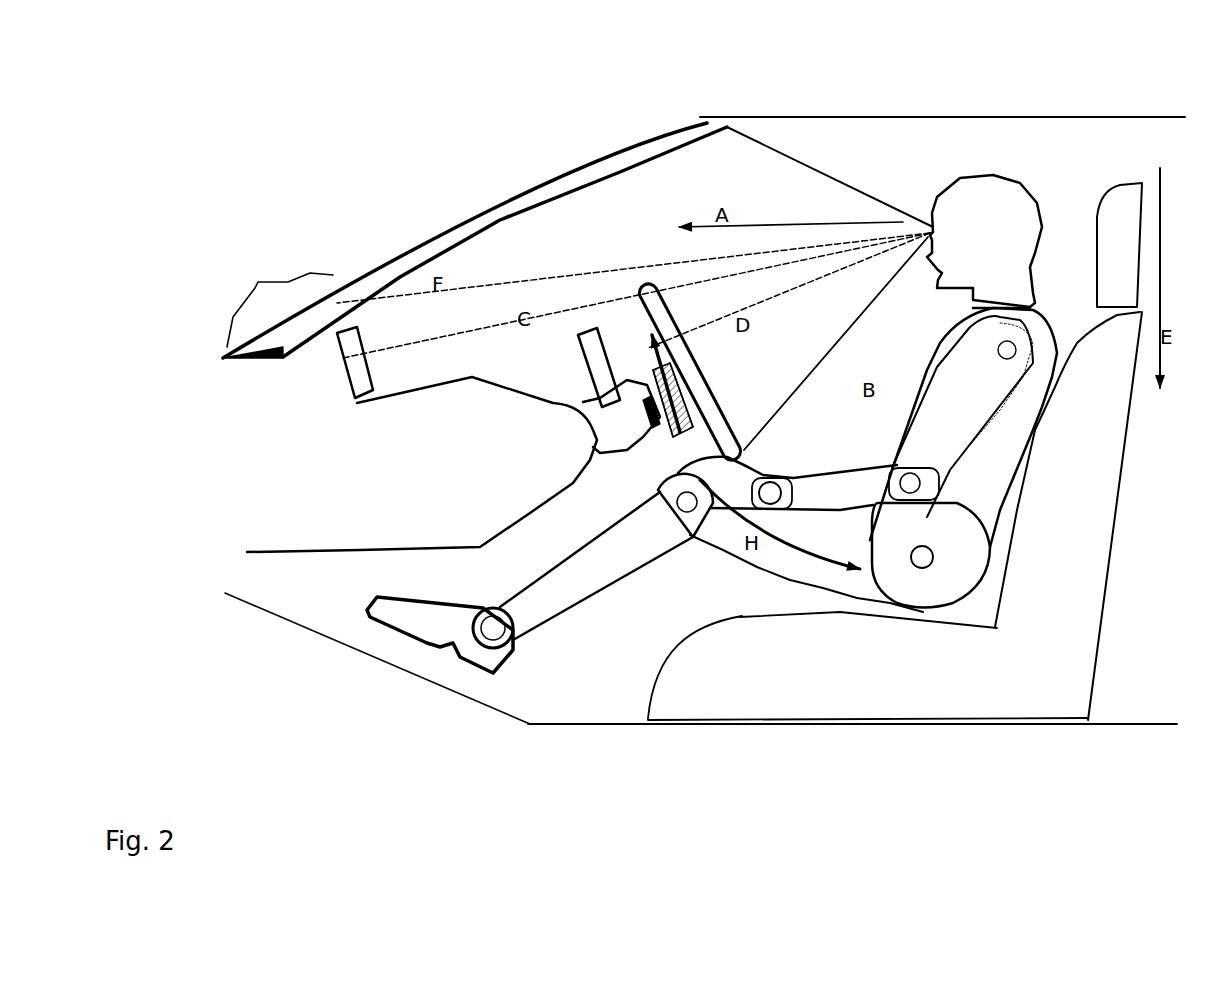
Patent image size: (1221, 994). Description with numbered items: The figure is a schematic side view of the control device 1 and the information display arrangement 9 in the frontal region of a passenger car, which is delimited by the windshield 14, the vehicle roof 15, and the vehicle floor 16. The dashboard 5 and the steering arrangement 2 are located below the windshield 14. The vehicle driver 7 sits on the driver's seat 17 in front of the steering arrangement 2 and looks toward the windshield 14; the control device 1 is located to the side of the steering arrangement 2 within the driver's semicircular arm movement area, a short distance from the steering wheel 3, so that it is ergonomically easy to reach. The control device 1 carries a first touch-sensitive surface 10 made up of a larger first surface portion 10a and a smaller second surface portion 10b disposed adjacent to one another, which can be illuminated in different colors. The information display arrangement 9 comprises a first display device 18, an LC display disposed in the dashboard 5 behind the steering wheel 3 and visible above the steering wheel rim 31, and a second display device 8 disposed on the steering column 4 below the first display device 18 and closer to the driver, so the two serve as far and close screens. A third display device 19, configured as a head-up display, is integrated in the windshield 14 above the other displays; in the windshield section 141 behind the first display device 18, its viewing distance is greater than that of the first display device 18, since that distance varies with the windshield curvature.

The control device 1 is at (700, 593).
The steering arrangement 2 is at (584, 595).
The steering wheel 3 is at (653, 286).
The steering column 4 is at (650, 420).
The dashboard 5 is at (313, 425).
The vehicle driver 7 is at (938, 363).
The second display device 8 is at (597, 380).
The information display arrangement 9 is at (665, 186).
The first touch-sensitive surface 10 is at (683, 438).
The first surface portion 10a is at (677, 438).
The second surface portion 10b is at (688, 437).
The windshield 14 is at (475, 240).
The vehicle roof 15 is at (990, 114).
The vehicle floor 16 is at (810, 730).
The driver's seat 17 is at (1004, 674).
The first display device 18 is at (357, 363).
The third display device 19 is at (397, 265).
The steering wheel rim 31 is at (646, 288).
The windshield section 141 is at (280, 303).